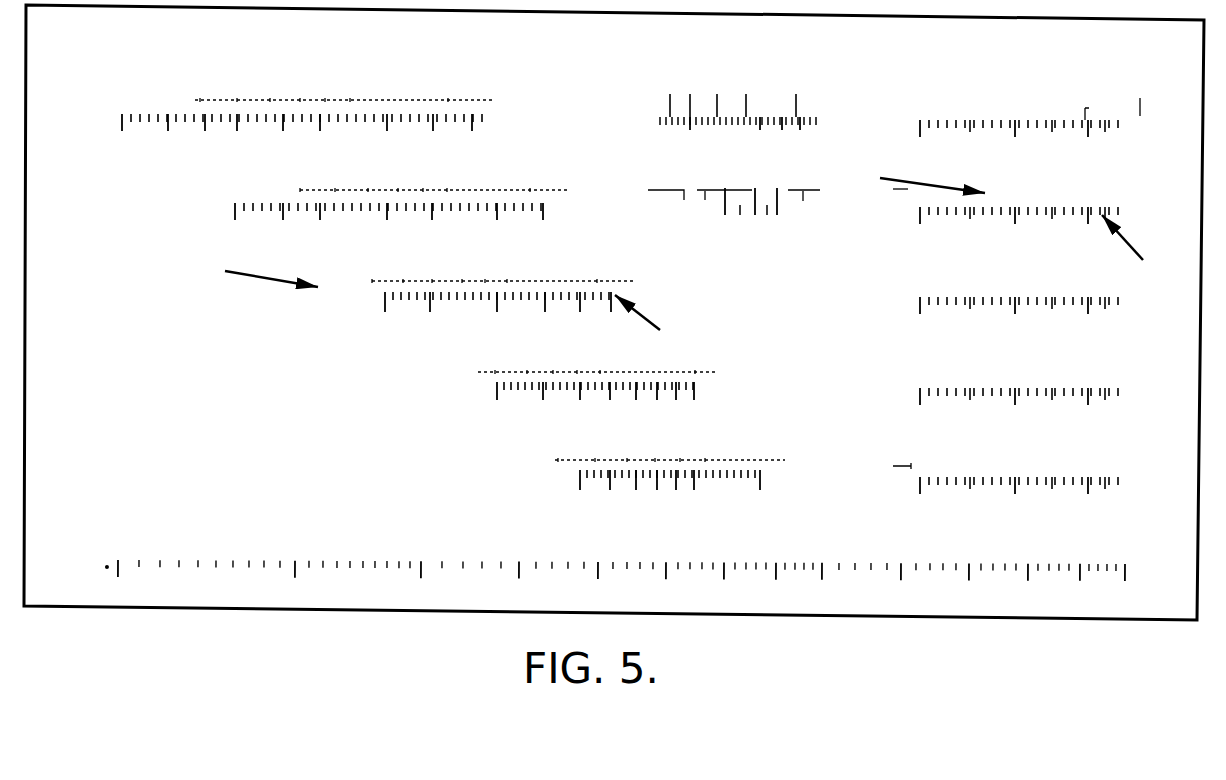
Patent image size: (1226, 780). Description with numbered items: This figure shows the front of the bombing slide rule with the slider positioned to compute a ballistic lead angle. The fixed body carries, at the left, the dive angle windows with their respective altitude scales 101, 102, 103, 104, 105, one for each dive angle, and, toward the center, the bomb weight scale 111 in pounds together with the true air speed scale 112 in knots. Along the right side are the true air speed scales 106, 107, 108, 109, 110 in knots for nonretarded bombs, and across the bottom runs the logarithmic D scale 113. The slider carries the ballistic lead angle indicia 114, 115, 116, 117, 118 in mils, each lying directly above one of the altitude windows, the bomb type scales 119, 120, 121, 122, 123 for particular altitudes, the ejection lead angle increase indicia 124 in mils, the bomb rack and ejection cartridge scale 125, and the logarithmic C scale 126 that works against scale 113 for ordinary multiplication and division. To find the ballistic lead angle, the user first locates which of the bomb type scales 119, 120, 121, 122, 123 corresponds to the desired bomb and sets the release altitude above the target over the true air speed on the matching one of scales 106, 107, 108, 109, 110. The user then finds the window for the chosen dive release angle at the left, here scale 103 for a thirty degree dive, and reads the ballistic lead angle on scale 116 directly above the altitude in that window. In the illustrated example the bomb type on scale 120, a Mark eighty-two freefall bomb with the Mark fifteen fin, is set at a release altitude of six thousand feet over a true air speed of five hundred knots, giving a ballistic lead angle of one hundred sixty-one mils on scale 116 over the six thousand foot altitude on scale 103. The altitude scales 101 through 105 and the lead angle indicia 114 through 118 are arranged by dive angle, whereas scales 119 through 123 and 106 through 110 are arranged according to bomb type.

The dive angle altitude scale 101 is at (87, 153).
The dive angle altitude scale 102 is at (195, 238).
The dive angle altitude scale 103 is at (373, 329).
The dive angle altitude scale 104 is at (478, 415).
The dive angle altitude scale 105 is at (547, 507).
The true air speed scale for nonretarded bombs 106 is at (901, 146).
The true air speed scale for nonretarded bombs 107 is at (901, 239).
The true air speed scale for nonretarded bombs 108 is at (896, 319).
The true air speed scale for nonretarded bombs 109 is at (894, 406).
The true air speed scale for nonretarded bombs 110 is at (890, 504).
The bomb weight scale 111 is at (663, 76).
The true air speed scale 112 is at (708, 246).
The logarithmic D scale 113 is at (83, 578).
The ballistic lead angle indicia 114 is at (187, 89).
The ballistic lead angle indicia 115 is at (289, 189).
The ballistic lead angle indicia 116 is at (358, 272).
The ballistic lead angle indicia 117 is at (473, 364).
The ballistic lead angle indicia 118 is at (539, 453).
The bomb type scale 119 is at (1006, 101).
The bomb type scale 120 is at (978, 182).
The bomb type scale 121 is at (959, 286).
The bomb type scale 122 is at (973, 372).
The bomb type scale 123 is at (971, 456).
The ejection lead angle increase indicia 124 is at (678, 155).
The bomb rack and ejection cartridge scale 125 is at (638, 198).
The logarithmic C scale 126 is at (167, 517).